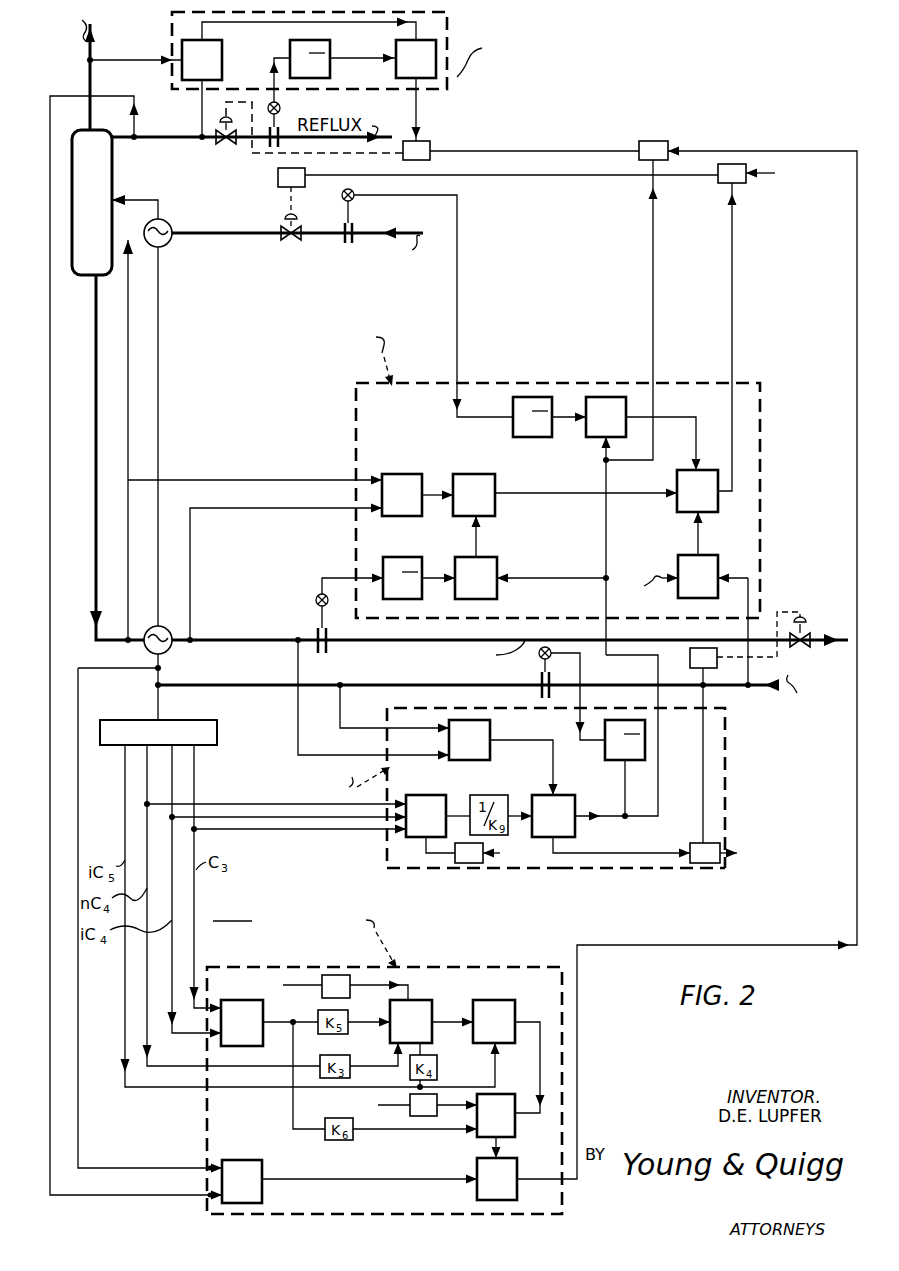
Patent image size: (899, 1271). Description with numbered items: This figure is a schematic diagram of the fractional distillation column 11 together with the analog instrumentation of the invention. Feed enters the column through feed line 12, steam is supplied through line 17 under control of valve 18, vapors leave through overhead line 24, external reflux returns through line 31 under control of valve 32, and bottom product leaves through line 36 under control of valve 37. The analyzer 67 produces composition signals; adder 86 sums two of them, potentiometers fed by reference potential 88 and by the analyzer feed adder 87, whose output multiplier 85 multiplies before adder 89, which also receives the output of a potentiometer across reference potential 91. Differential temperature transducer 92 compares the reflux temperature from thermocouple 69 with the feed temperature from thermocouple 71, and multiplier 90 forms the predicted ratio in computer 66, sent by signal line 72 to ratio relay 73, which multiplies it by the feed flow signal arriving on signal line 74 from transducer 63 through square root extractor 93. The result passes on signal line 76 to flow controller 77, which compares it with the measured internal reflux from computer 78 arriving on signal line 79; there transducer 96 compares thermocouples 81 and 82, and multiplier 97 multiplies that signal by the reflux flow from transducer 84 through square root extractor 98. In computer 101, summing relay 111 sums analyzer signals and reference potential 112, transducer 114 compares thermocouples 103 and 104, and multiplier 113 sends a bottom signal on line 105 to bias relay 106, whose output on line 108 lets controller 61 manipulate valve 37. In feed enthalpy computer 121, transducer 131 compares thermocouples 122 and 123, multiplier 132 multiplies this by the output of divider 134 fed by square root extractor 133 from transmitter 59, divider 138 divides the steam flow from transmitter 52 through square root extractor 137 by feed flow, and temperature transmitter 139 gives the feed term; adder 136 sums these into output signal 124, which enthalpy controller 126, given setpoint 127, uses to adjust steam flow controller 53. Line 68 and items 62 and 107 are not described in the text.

The fractional distillation column 11 is at (101, 200).
The feed line 12 is at (741, 685).
The steam supply line 17 is at (231, 238).
The steam valve 18 is at (297, 240).
The overhead line 24 is at (92, 52).
The external reflux line 31 is at (350, 142).
The reflux flow control valve 32 is at (227, 150).
The bottom product line 36 is at (405, 640).
The bottom product control valve 37 is at (811, 647).
The steam flow transmitter 52 is at (342, 195).
The steam flow controller 53 is at (285, 188).
The bottom product flow transmitter 59 is at (318, 598).
The bottom product flow controller 61 is at (691, 665).
The feed flow element 62 is at (539, 680).
The feed flow transducer 63 is at (549, 658).
The computer 66 is at (330, 963).
The analyzer 67 is at (132, 720).
The sample line to analyzer 68 is at (165, 700).
The reflux thermocouple 69 is at (136, 141).
The feed thermocouple 71 is at (160, 668).
The signal line 72 is at (577, 1184).
The ratio relay 73 is at (648, 141).
The feed flow signal line 74 is at (654, 200).
The setpoint signal line 76 is at (566, 150).
The flow controller 77 is at (424, 140).
The internal reflux computer 78 is at (447, 92).
The measured reflux signal line 79 is at (415, 111).
The overhead thermocouple 81 is at (87, 60).
The external reflux thermocouple 82 is at (203, 142).
The differential pressure transducer 84 is at (281, 109).
The multiplier 85 is at (506, 1000).
The adder 86 is at (258, 1000).
The adder 87 is at (424, 1000).
The reference potential 88 is at (316, 985).
The adder 89 is at (502, 1094).
The multiplier 90 is at (517, 1190).
The reference potential 91 is at (380, 1105).
The differential temperature transducer 92 is at (260, 1193).
The square root extractor 93 is at (638, 744).
The differential temperature transducer 96 is at (218, 40).
The multiplier 97 is at (400, 41).
The square root extractor 98 is at (329, 40).
The computer 101 is at (387, 834).
The thermocouple 103 is at (296, 648).
The thermocouple 104 is at (340, 683).
The signal line 105 is at (640, 868).
The bias relay 106 is at (718, 868).
The bottom ratio controller 107 is at (734, 858).
The signal line 108 is at (705, 745).
The summing relay 111 is at (434, 795).
The reference potential 112 is at (500, 853).
The multiplier 113 is at (561, 795).
The differential temperature transducer 114 is at (493, 755).
The feed enthalpy computer 121 is at (354, 383).
The thermocouple 122 is at (128, 648).
The thermocouple 123 is at (192, 648).
The enthalpy output signal 124 is at (737, 193).
The enthalpy controller recorder 126 is at (725, 184).
The enthalpy setpoint 127 is at (760, 173).
The differential temperature transducer 131 is at (406, 474).
The multiplier 132 is at (463, 474).
The square root extractor 133 is at (406, 557).
The divider 134 is at (488, 573).
The adder 136 is at (677, 483).
The square root extractor 137 is at (522, 437).
The divider 138 is at (595, 437).
The temperature transmitter 139 is at (676, 574).